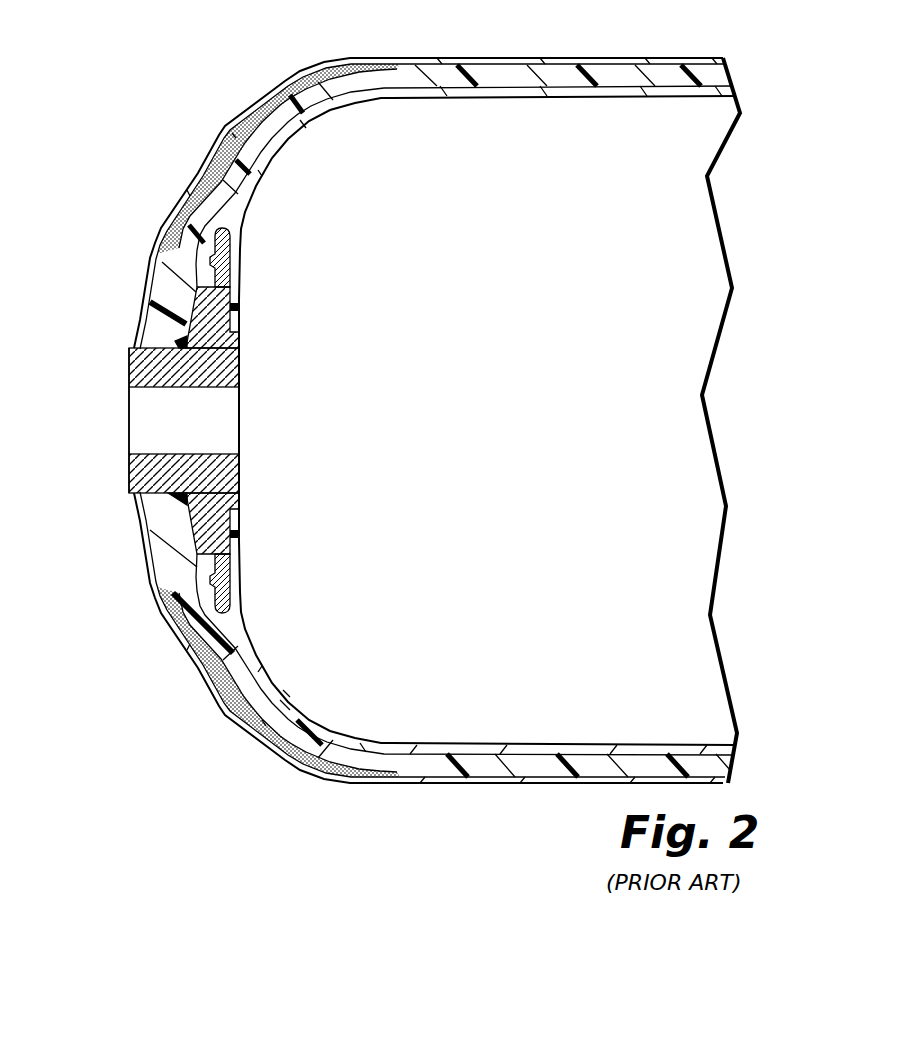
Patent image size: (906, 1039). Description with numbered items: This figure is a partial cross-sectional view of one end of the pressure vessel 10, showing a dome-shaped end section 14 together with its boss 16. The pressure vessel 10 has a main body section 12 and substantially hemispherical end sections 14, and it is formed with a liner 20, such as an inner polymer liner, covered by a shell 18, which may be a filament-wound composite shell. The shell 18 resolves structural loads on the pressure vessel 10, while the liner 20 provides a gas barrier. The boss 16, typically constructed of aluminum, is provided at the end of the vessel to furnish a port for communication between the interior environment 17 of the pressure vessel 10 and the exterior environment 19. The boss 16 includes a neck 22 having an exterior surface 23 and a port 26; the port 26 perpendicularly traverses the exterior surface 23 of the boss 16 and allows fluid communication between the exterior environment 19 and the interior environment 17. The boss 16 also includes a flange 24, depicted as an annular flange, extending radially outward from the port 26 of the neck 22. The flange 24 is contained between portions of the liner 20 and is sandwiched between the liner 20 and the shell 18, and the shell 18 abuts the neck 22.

The pressure vessel 10 is at (160, 129).
The main body section 12 is at (680, 62).
The end section 14 is at (225, 123).
The boss 16 is at (128, 483).
The interior environment 17 is at (340, 433).
The shell 18 is at (590, 61).
The exterior environment 19 is at (40, 391).
The liner 20 is at (727, 88).
The neck 22 is at (153, 368).
The exterior surface 23 is at (128, 458).
The flange 24 is at (222, 290).
The port 26 is at (203, 431).